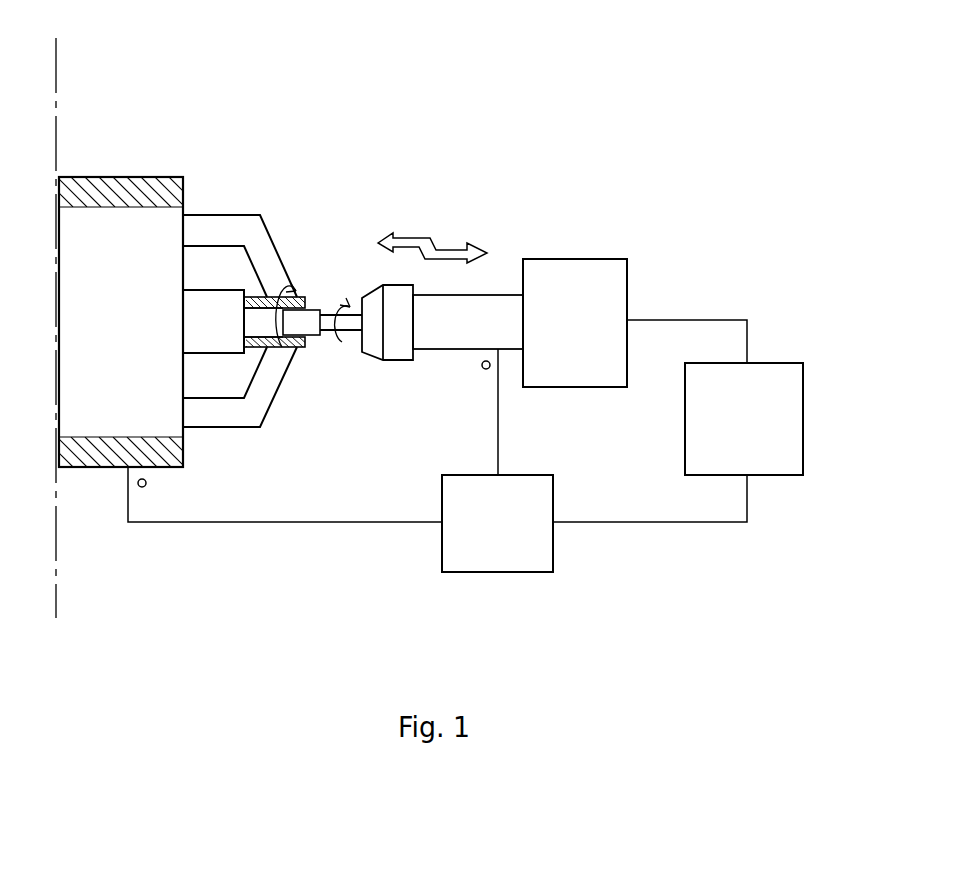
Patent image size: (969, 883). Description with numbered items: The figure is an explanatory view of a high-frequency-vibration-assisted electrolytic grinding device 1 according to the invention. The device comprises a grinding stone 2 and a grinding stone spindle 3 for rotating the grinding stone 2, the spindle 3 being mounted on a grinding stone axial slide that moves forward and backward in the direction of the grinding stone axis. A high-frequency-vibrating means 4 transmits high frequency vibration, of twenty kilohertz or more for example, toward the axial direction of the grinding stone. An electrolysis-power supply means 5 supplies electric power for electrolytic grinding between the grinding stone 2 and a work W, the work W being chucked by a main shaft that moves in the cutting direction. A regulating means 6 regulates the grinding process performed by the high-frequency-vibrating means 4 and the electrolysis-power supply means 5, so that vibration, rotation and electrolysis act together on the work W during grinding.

The high-frequency-vibration-assisted electrolytic grinding device 1 is at (620, 107).
The work W is at (302, 297).
The grinding stone 2 is at (310, 300).
The grinding stone spindle 3 is at (492, 296).
The high-frequency-vibrating means 4 is at (617, 258).
The electrolysis-power supply means 5 is at (467, 572).
The regulating means 6 is at (785, 363).